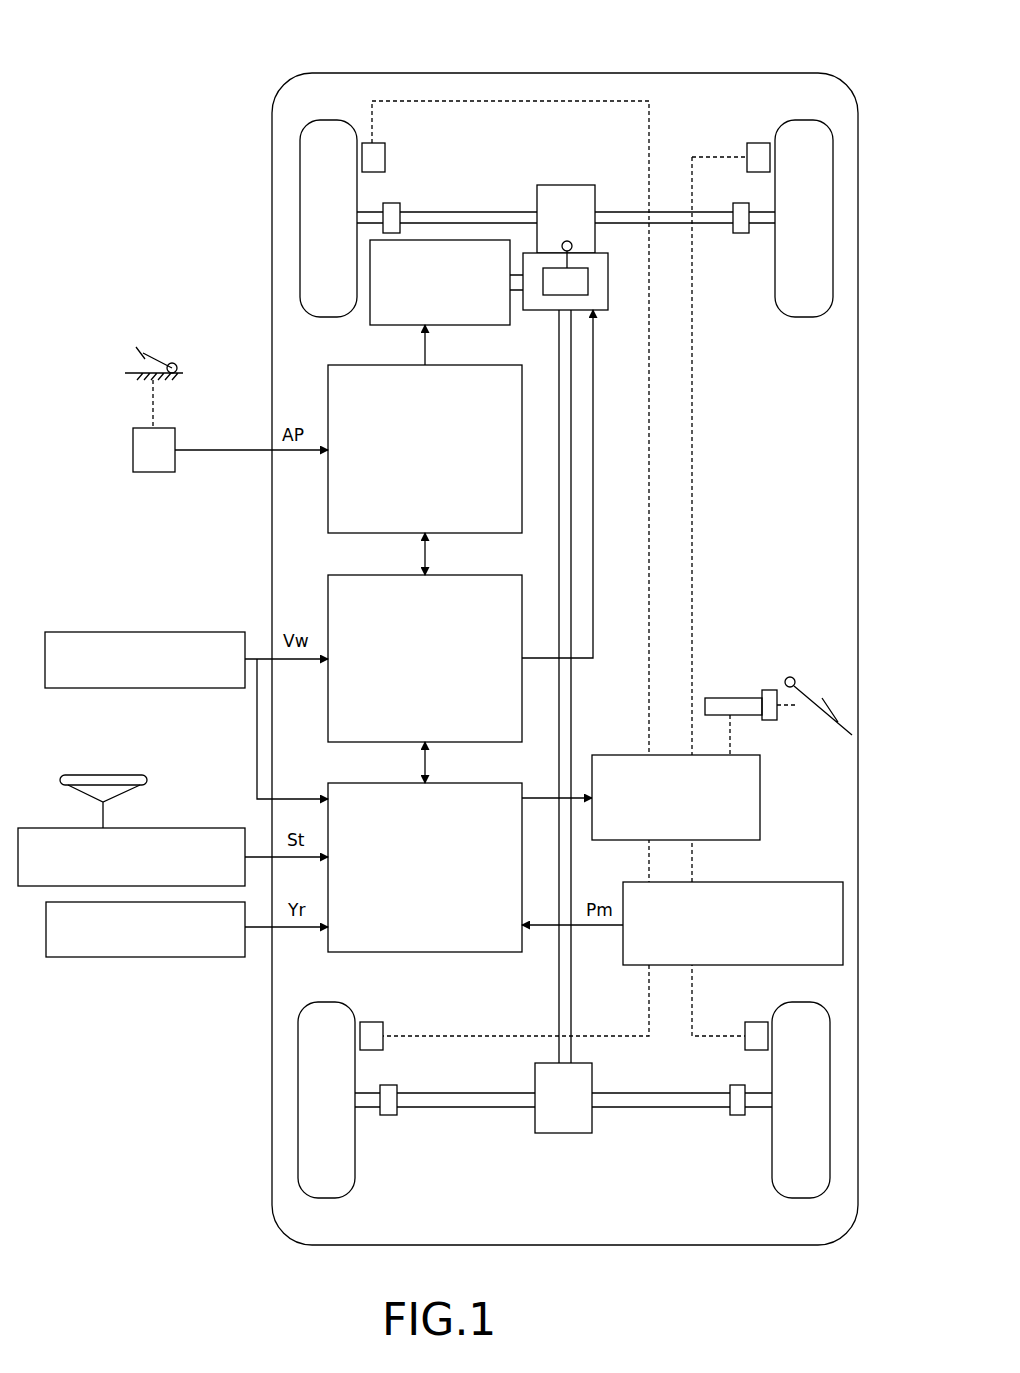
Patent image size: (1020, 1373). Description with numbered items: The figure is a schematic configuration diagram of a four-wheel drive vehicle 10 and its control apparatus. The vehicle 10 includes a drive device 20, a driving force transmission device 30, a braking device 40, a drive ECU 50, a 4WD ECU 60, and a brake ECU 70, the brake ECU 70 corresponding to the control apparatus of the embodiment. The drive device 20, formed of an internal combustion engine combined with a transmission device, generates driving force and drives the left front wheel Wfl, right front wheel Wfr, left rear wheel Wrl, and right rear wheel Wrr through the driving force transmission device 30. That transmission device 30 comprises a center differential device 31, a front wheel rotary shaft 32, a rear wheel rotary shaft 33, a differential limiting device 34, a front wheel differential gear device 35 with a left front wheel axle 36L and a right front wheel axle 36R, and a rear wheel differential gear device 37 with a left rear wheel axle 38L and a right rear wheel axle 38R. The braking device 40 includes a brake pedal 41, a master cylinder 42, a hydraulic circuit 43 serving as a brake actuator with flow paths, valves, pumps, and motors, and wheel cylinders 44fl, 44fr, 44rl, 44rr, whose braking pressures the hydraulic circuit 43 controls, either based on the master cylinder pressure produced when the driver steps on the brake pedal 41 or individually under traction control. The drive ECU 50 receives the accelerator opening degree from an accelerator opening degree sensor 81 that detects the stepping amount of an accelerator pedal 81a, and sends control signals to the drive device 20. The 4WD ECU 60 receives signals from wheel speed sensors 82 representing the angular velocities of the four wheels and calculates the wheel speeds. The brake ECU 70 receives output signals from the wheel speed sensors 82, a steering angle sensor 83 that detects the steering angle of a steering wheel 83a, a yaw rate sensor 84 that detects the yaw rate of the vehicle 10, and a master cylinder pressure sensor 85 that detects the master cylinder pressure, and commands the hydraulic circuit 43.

The vehicle 10 is at (628, 54).
The drive device 20 is at (398, 327).
The driving force transmission device 30 is at (653, 374).
The center differential device 31 is at (608, 290).
The front wheel rotary shaft 32 is at (573, 246).
The rear wheel rotary shaft 33 is at (560, 575).
The differential limiting device 34 is at (544, 297).
The front wheel differential gear device 35 is at (551, 185).
The left front wheel axle 36L is at (470, 212).
The right front wheel axle 36R is at (630, 212).
The rear wheel differential gear device 37 is at (561, 1133).
The left rear wheel axle 38L is at (468, 1107).
The right rear wheel axle 38R is at (677, 1107).
The braking device 40 is at (633, 595).
The brake pedal 41 is at (838, 712).
The master cylinder 42 is at (735, 698).
The hydraulic circuit 43 is at (760, 780).
The left front wheel cylinder 44fl is at (386, 160).
The right front wheel cylinder 44fr is at (753, 143).
The left rear wheel cylinder 44rl is at (372, 1022).
The right rear wheel cylinder 44rr is at (755, 1050).
The drive ECU 50 is at (328, 378).
The 4WD ECU 60 is at (328, 586).
The brake ECU 70 is at (352, 783).
The accelerator opening degree sensor 81 is at (155, 472).
The accelerator pedal 81a is at (145, 352).
The wheel speed sensors 82 is at (150, 632).
The steering angle sensor 83 is at (207, 828).
The steering wheel 83a is at (103, 775).
The yaw rate sensor 84 is at (143, 957).
The master cylinder pressure sensor 85 is at (790, 882).
The left front wheel Wfl is at (300, 213).
The right front wheel Wfr is at (833, 215).
The left rear wheel Wrl is at (298, 1098).
The right rear wheel Wrr is at (830, 1098).